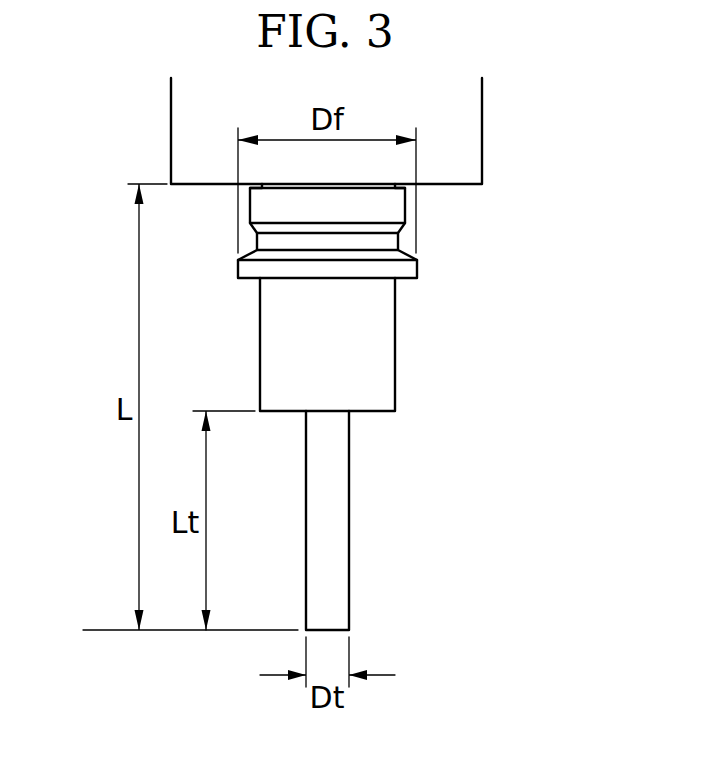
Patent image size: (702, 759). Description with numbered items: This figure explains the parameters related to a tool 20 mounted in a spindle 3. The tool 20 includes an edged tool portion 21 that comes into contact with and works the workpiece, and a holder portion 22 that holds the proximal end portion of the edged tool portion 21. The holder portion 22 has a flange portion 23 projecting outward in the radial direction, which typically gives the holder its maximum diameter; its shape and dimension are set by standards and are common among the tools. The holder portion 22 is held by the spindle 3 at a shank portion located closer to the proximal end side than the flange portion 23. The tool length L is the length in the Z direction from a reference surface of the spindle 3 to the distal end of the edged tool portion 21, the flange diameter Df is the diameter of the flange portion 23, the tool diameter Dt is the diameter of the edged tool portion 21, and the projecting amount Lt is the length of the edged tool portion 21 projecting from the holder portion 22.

The spindle 3 is at (482, 122).
The tool 20 is at (473, 462).
The edged tool portion 21 is at (349, 520).
The holder portion 22 is at (425, 366).
The flange portion 23 is at (417, 269).